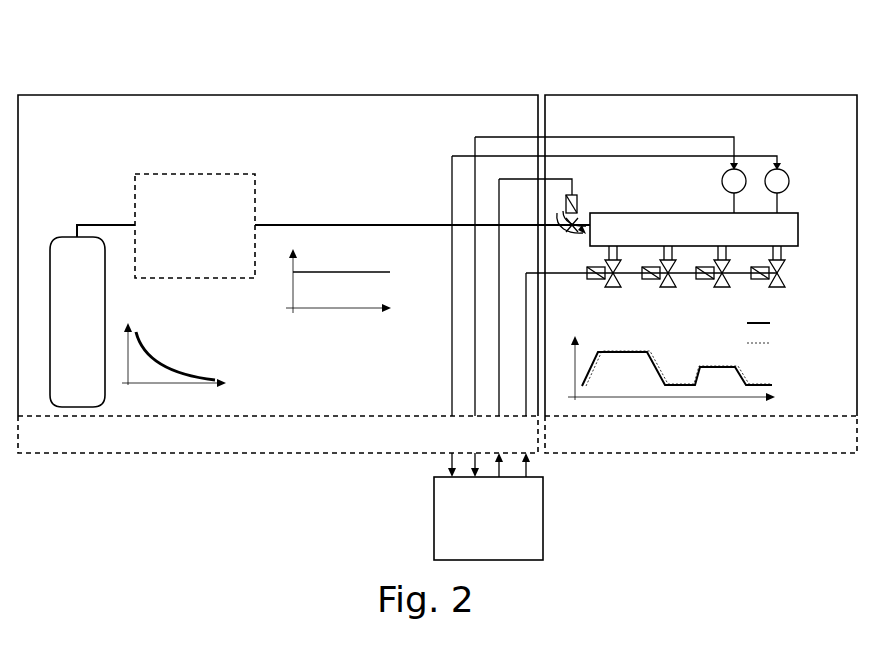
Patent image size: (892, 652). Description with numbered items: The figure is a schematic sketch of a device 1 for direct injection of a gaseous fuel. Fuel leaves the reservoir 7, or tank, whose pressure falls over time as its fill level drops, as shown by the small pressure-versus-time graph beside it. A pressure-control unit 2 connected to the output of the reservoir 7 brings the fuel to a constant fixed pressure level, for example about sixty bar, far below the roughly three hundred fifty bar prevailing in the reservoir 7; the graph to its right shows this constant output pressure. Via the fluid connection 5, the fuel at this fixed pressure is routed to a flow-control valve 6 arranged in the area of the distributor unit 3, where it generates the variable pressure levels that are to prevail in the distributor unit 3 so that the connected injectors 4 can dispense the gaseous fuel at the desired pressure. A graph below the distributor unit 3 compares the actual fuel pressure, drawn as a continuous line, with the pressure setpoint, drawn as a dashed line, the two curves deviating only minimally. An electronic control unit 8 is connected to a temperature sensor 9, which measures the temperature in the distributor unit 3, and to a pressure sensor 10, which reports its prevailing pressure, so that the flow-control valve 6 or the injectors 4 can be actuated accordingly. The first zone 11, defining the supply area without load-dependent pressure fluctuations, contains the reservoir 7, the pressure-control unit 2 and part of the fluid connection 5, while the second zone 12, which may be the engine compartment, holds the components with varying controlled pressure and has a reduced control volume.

The device 1 is at (632, 78).
The pressure-control unit 2 is at (196, 174).
The distributor unit 3 is at (795, 213).
The injectors 4 is at (676, 288).
The fluid connection 5 is at (365, 224).
The flow-control valve 6 is at (583, 212).
The reservoir 7 is at (70, 236).
The electronic control unit 8 is at (543, 508).
The temperature sensor 9 is at (722, 171).
The pressure sensor 10 is at (786, 170).
The first zone 11 is at (257, 453).
The second zone 12 is at (768, 453).